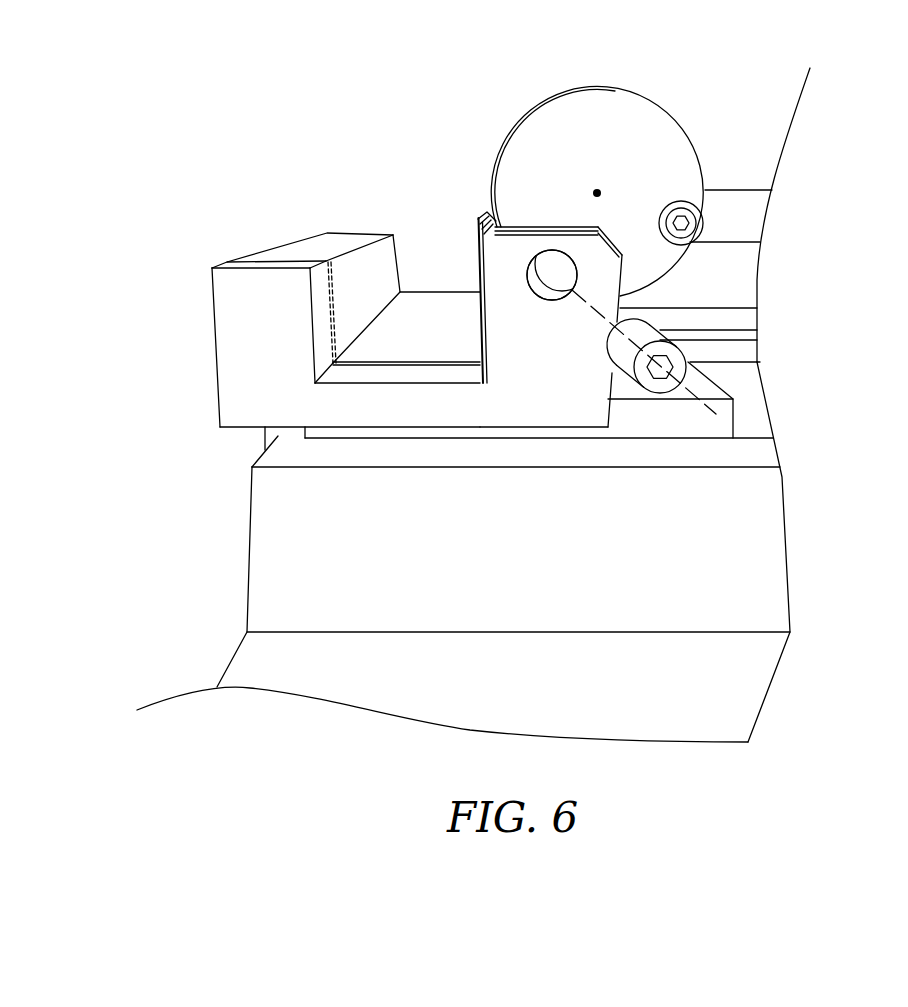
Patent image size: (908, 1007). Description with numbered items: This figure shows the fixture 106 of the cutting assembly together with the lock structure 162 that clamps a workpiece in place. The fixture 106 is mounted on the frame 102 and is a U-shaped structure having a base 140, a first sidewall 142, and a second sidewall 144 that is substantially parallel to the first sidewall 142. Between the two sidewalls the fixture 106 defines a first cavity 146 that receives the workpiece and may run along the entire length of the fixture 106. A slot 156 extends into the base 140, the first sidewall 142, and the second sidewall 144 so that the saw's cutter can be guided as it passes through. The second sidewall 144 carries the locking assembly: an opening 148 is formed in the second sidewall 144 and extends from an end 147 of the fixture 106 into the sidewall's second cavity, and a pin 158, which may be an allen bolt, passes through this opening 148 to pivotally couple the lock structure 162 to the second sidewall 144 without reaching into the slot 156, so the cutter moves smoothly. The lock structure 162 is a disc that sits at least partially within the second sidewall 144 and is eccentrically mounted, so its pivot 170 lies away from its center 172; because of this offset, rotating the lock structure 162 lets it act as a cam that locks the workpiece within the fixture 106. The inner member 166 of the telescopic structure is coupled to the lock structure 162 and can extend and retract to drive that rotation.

The frame 102 is at (246, 547).
The fixture 106 is at (322, 240).
The base 140 is at (455, 291).
The first sidewall 142 is at (295, 269).
The second sidewall 144 is at (477, 218).
The first cavity 146 is at (424, 262).
The end of the fixture 147 is at (573, 387).
The opening 148 is at (578, 278).
The slot 156 is at (294, 260).
The pin 158 is at (662, 330).
The lock structure 162 is at (555, 90).
The inner member 166 is at (740, 210).
The pivot 170 is at (569, 254).
The center 172 is at (598, 192).